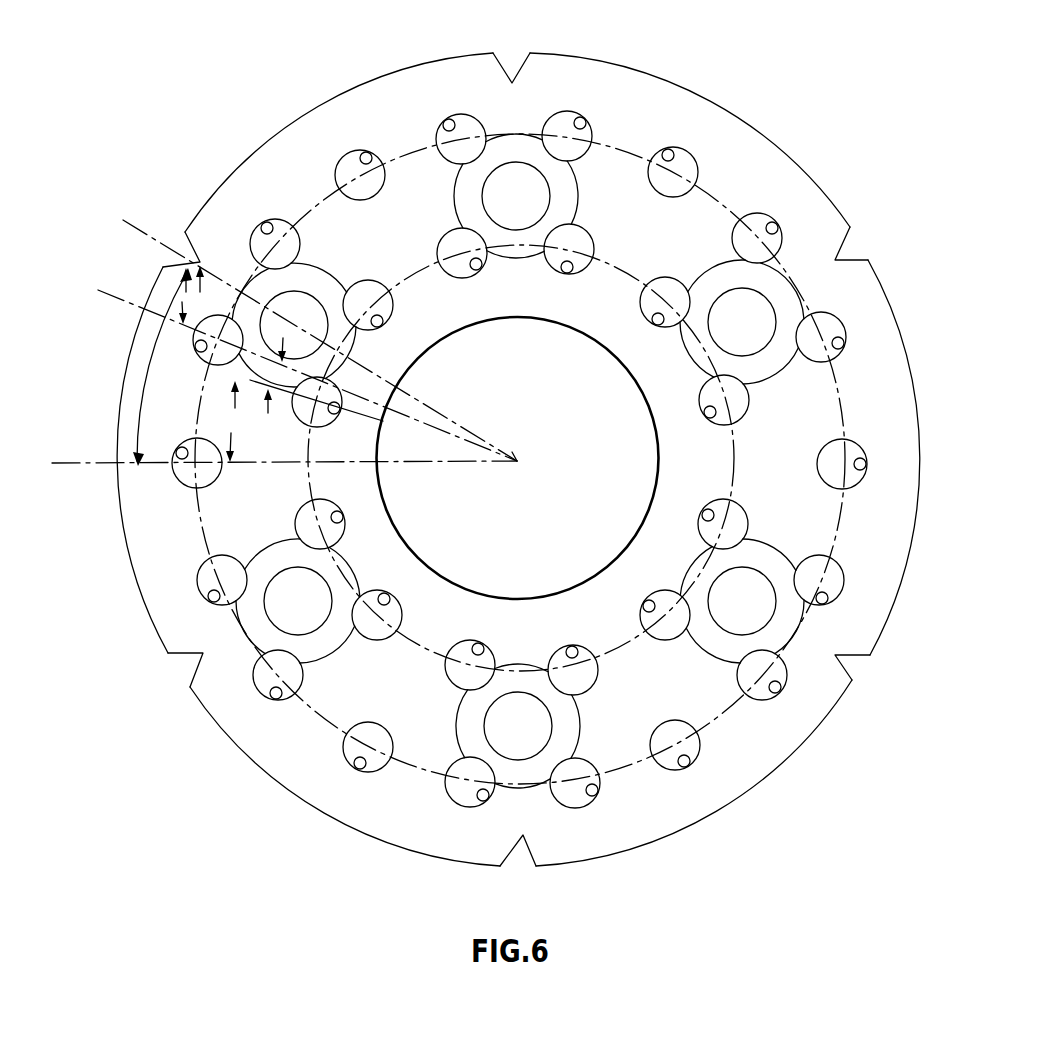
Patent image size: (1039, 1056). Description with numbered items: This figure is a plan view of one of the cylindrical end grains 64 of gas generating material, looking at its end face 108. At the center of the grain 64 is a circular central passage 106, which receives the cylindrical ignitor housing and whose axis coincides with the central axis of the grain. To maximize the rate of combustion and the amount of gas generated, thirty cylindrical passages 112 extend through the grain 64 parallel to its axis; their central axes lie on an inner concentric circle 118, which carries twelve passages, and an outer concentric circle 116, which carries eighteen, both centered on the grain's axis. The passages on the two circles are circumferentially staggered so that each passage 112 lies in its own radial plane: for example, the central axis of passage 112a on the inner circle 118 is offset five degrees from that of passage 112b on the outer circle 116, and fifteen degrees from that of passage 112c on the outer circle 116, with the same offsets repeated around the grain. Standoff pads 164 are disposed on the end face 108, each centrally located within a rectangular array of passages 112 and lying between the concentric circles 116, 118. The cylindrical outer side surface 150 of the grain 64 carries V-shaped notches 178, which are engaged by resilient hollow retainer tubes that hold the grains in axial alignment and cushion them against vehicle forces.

The end grain 64 is at (897, 135).
The central passage 106 is at (519, 447).
The end face 108 is at (147, 475).
The cylindrical passages 112 is at (451, 127).
The passage 112a is at (517, 461).
The passage 112b is at (200, 346).
The passage 112c is at (178, 456).
The outer concentric circle 116 is at (197, 503).
The inner concentric circle 118 is at (288, 476).
The cylindrical outer side surface 150 is at (774, 140).
The standoff pad 164 is at (514, 195).
The V-shaped notches 178 is at (513, 62).